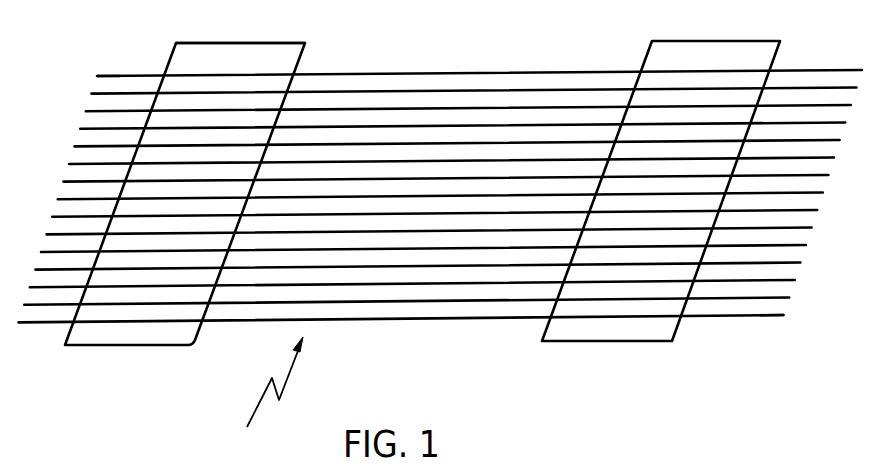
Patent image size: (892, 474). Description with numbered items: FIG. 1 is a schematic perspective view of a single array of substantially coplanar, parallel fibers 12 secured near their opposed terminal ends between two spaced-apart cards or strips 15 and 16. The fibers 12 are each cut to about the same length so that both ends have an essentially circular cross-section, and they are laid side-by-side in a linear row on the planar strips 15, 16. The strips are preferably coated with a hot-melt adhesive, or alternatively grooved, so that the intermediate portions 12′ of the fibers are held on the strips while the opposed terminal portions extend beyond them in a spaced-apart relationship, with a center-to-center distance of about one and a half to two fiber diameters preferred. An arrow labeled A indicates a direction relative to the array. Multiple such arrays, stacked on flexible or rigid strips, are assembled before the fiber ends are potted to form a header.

The fibers 12 is at (452, 90).
The intermediate portions 12′ is at (250, 75).
The strip 15 is at (112, 348).
The strip 16 is at (674, 330).
The direction arrow A is at (268, 397).